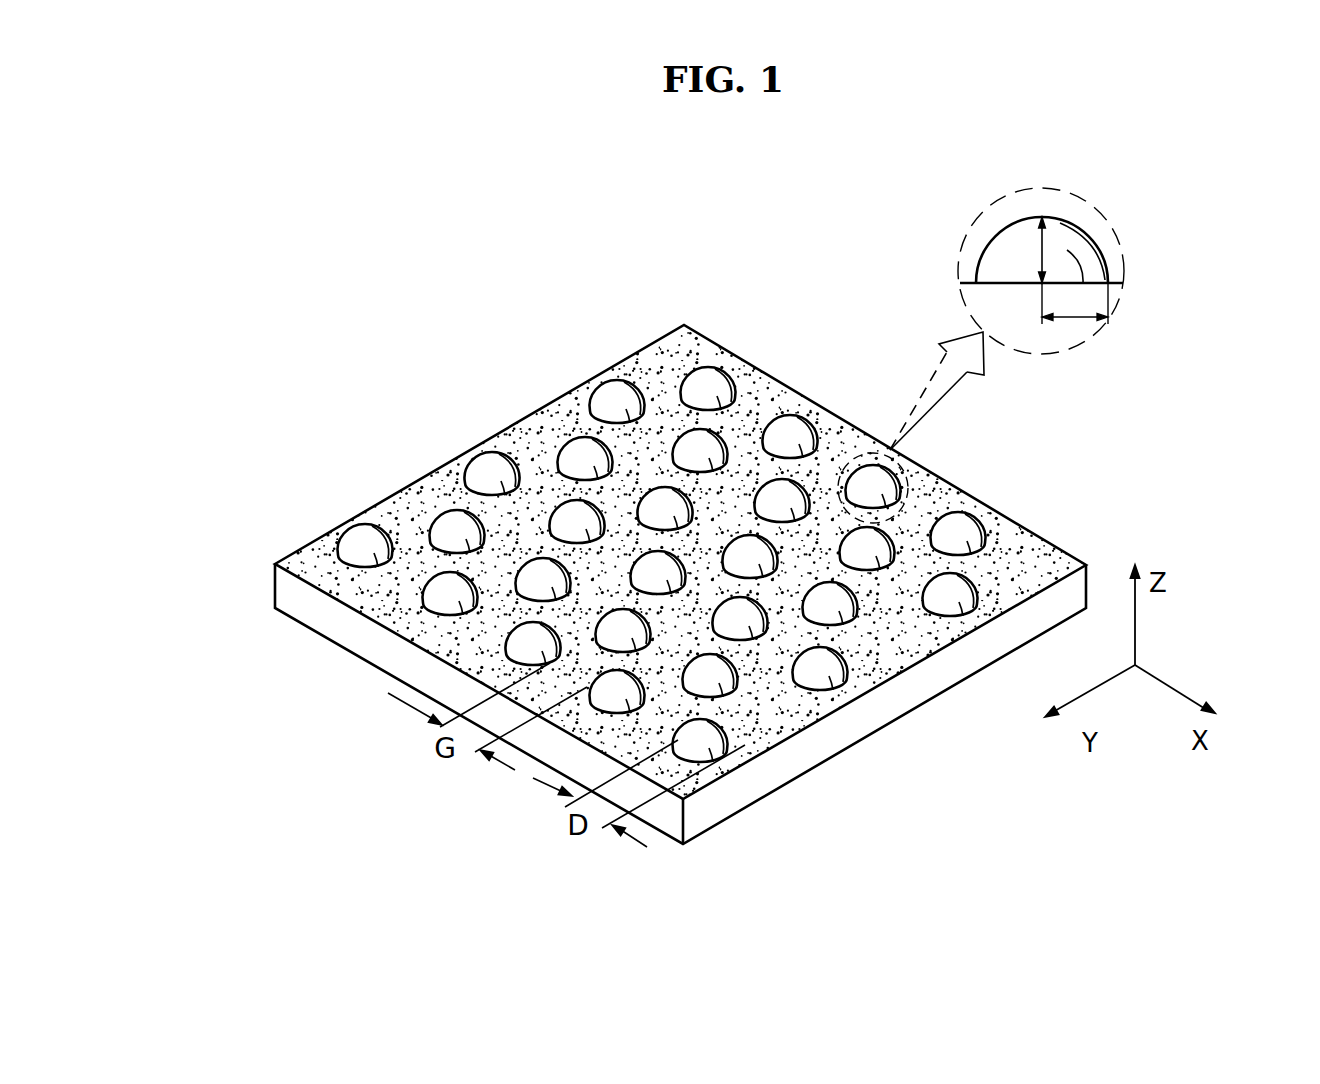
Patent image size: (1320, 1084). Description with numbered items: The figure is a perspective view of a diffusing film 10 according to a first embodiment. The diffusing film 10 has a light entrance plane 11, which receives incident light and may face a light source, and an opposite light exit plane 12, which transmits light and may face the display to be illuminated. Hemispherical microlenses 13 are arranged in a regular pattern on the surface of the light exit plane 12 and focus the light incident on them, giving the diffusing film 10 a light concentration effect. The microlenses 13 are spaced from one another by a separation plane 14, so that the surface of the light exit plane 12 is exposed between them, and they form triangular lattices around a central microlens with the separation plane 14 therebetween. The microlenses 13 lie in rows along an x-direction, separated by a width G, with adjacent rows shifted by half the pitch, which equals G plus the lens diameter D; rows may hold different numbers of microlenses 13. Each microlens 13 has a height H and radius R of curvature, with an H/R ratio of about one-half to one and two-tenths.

The diffusing film 10 is at (252, 583).
The light entrance plane 11 is at (350, 652).
The light exit plane 12 is at (322, 567).
The microlenses 13 is at (362, 537).
The separation plane 14 is at (412, 513).